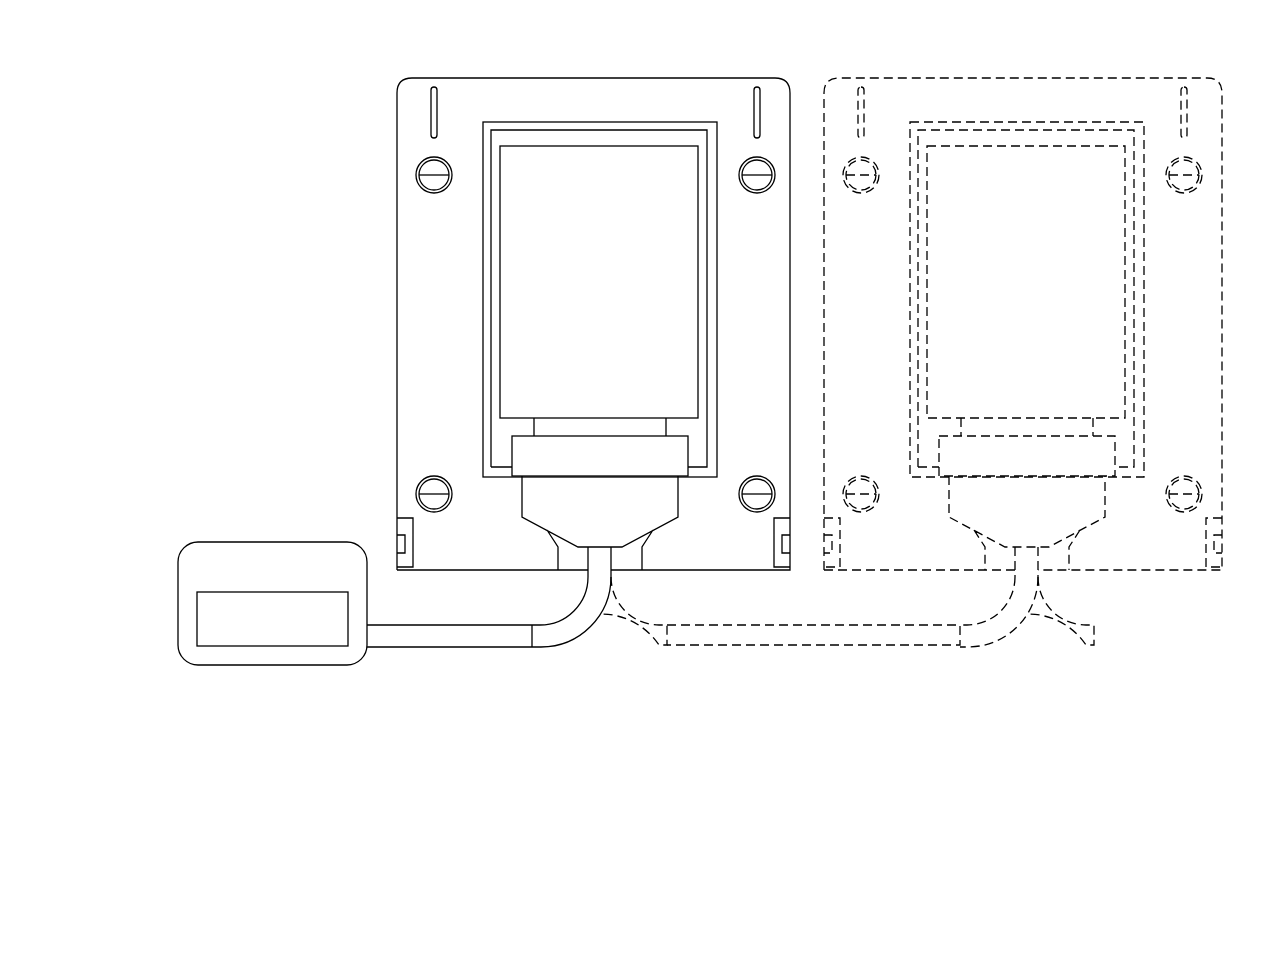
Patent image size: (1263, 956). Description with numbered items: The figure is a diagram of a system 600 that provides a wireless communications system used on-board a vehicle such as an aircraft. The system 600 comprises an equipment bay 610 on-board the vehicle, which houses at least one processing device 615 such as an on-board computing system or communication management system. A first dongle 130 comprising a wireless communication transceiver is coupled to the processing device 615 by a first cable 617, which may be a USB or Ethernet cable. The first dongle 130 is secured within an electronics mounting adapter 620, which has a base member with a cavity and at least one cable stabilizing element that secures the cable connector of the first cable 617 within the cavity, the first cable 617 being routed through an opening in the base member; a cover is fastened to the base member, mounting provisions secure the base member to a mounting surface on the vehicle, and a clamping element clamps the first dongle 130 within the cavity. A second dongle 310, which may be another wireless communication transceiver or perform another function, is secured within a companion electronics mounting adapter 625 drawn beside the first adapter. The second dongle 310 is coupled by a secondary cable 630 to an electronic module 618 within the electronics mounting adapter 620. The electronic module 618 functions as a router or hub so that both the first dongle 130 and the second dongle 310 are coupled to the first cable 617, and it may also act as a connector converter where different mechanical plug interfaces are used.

The system 600 is at (299, 254).
The equipment bay 610 is at (272, 542).
The processing device 615 is at (273, 646).
The first cable 617 is at (462, 645).
The electronic module 618 is at (688, 450).
The electronics mounting adapter 620 is at (596, 78).
The companion electronics mounting adapter 625 is at (1020, 78).
The secondary cable 630 is at (813, 645).
The first dongle 130 is at (620, 304).
The second dongle 310 is at (1047, 304).